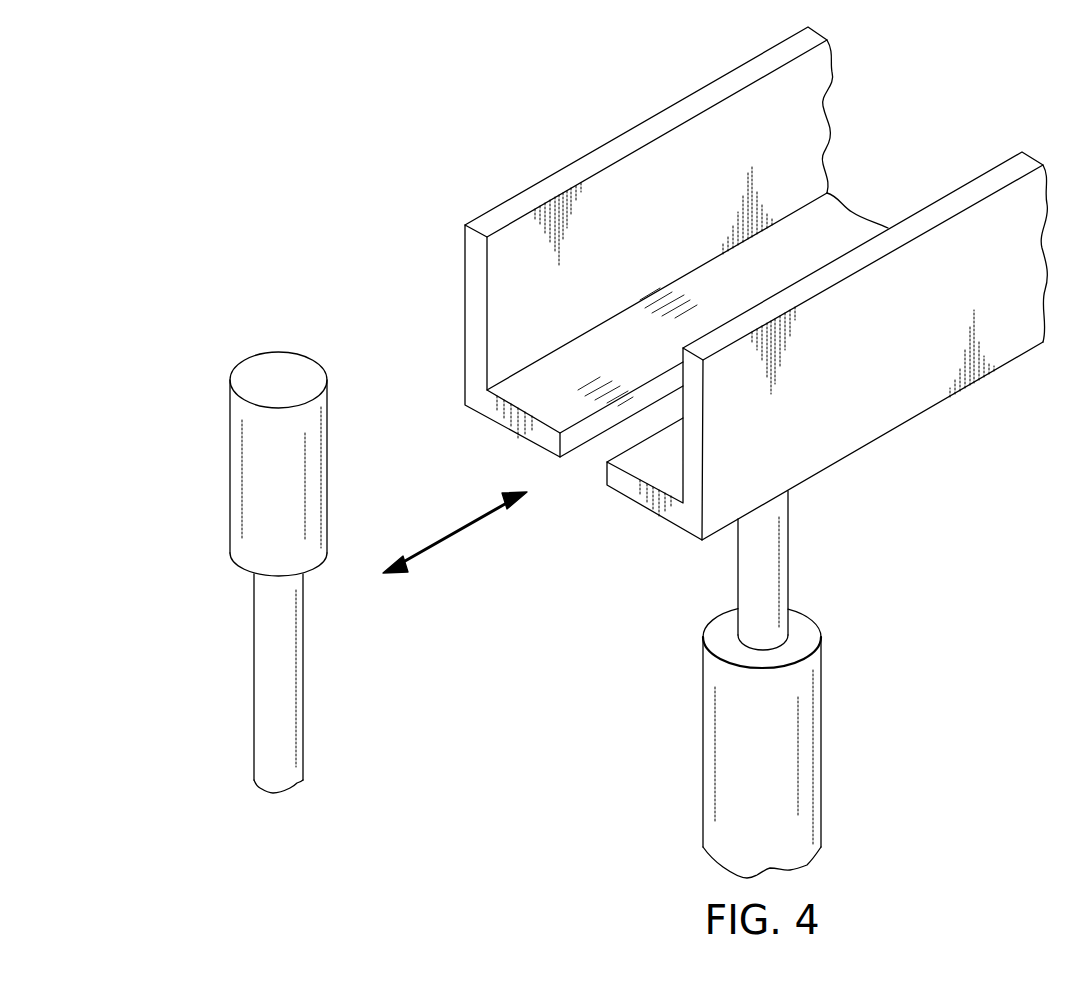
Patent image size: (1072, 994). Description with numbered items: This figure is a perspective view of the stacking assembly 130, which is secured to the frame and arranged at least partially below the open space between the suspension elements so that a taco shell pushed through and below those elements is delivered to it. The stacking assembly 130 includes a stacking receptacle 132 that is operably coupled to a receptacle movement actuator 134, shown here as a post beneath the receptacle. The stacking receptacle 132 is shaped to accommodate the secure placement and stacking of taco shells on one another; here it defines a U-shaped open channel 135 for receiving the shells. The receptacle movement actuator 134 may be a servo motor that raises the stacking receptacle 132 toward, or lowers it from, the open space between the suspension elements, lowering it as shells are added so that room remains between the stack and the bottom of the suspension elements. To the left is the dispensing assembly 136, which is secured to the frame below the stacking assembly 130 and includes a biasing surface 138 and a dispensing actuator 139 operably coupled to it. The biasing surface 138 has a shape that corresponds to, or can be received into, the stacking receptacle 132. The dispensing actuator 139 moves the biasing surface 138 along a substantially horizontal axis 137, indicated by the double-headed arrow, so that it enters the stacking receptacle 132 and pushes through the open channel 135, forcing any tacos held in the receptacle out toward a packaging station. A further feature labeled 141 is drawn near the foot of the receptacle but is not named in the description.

The stacking assembly 130 is at (708, 235).
The stacking receptacle 132 is at (789, 346).
The receptacle movement actuator 134 is at (820, 745).
The open channel 135 is at (902, 146).
The dispensing assembly 136 is at (242, 511).
The substantially horizontal axis 137 is at (457, 532).
The biasing surface 138 is at (229, 467).
The dispensing actuator 139 is at (253, 673).
The flange / foot 141 is at (583, 472).